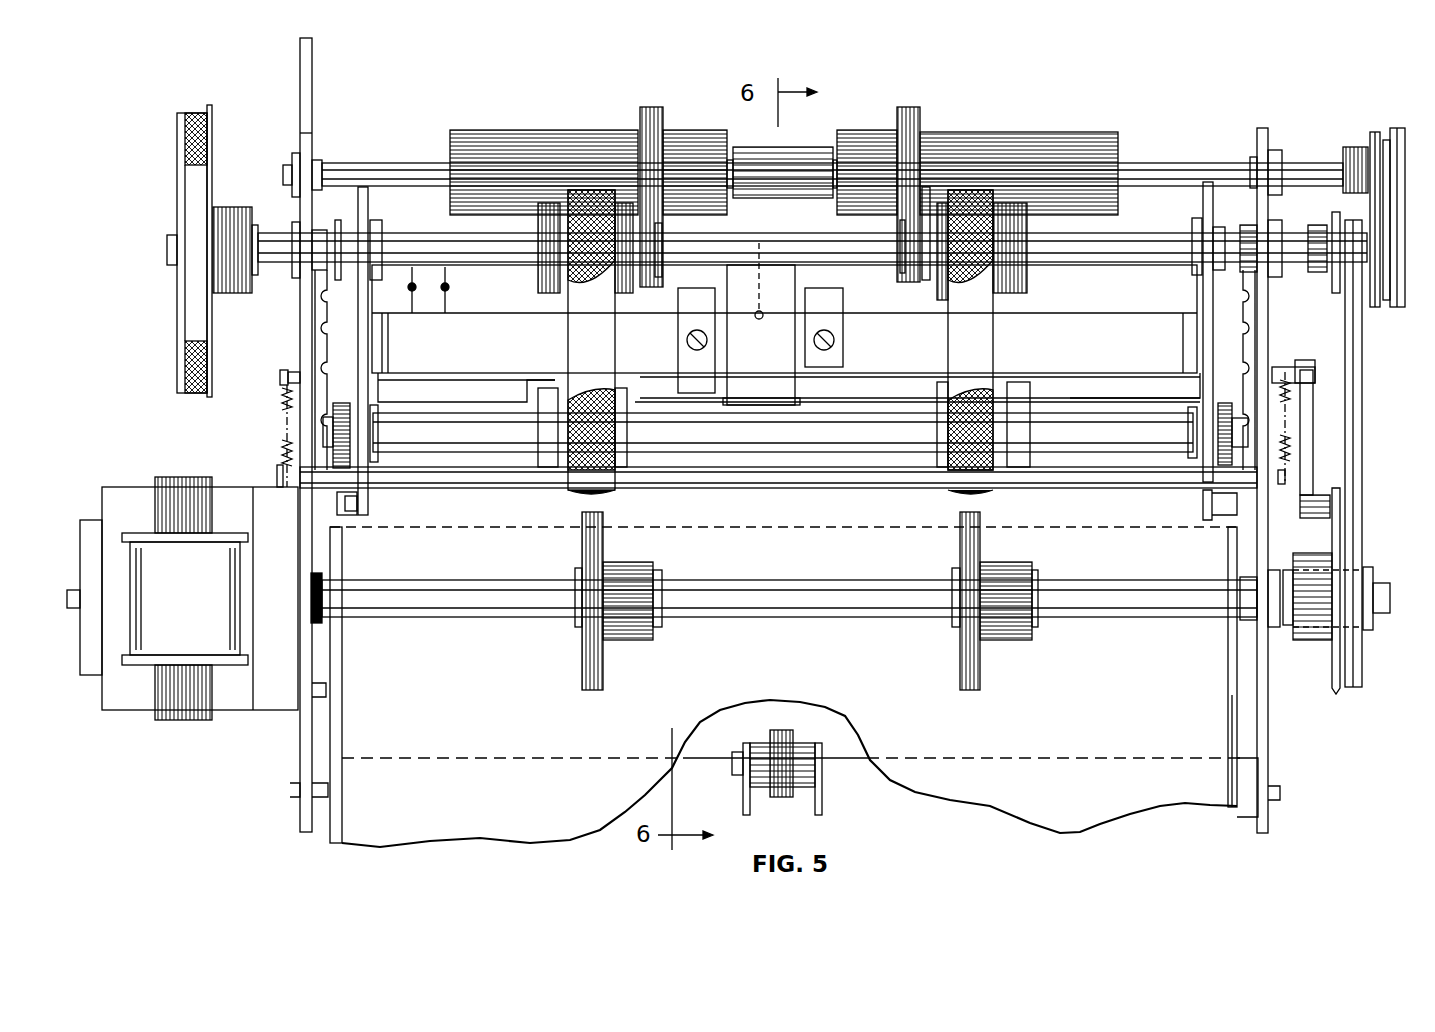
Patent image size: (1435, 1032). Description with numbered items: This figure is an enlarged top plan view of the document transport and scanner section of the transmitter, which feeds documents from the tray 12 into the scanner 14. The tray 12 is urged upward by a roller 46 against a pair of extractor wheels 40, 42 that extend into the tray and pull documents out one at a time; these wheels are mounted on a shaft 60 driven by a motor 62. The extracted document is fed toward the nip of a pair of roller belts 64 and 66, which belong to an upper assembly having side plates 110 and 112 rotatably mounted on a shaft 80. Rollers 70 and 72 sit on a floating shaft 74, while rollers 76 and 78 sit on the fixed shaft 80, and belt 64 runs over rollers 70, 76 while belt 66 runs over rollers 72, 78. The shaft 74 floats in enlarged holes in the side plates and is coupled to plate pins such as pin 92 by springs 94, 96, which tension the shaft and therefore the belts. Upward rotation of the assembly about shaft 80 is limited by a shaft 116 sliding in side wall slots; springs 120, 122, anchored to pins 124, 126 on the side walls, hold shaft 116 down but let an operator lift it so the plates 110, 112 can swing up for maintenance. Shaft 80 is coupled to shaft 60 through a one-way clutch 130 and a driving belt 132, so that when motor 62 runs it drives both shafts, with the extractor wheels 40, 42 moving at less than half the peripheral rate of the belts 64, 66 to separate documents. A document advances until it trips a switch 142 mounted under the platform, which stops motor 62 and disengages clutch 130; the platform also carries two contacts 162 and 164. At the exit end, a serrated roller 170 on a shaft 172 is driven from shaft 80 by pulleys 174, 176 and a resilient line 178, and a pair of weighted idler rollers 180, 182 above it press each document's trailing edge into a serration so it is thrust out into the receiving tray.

The tray 12 is at (776, 658).
The scanner 14 is at (463, 68).
The extractor wheel 40 is at (582, 514).
The extractor wheel 42 is at (980, 516).
The roller 46 is at (772, 737).
The shaft 60 is at (454, 590).
The motor 62 is at (135, 718).
The roller belt 64 is at (600, 342).
The roller belt 66 is at (970, 342).
The roller 70 is at (553, 388).
The roller 72 is at (1028, 378).
The shaft 74 is at (1070, 430).
The roller 76 is at (538, 292).
The roller 78 is at (1026, 291).
The shaft 80 is at (1115, 250).
The pin 92 is at (352, 515).
The spring 94 is at (342, 403).
The spring 96 is at (1226, 399).
The side plate 110 is at (352, 314).
The side plate 112 is at (1204, 304).
The shaft 116 is at (691, 486).
The spring 120 is at (282, 400).
The spring 122 is at (1288, 445).
The pin 124 is at (291, 370).
The pin 126 is at (1286, 367).
The one-way clutch 130 is at (1318, 632).
The driving belt 132 is at (1354, 688).
The switch 142 is at (760, 324).
The contact 162 is at (410, 292).
The contact 164 is at (451, 280).
The serrated roller 170 is at (507, 130).
The shaft 172 is at (1118, 132).
The pulley 174 is at (1368, 130).
The pulley 176 is at (1396, 300).
The resilient line 178 is at (1390, 130).
The weighted idler roller 180 is at (656, 110).
The weighted idler roller 182 is at (917, 115).